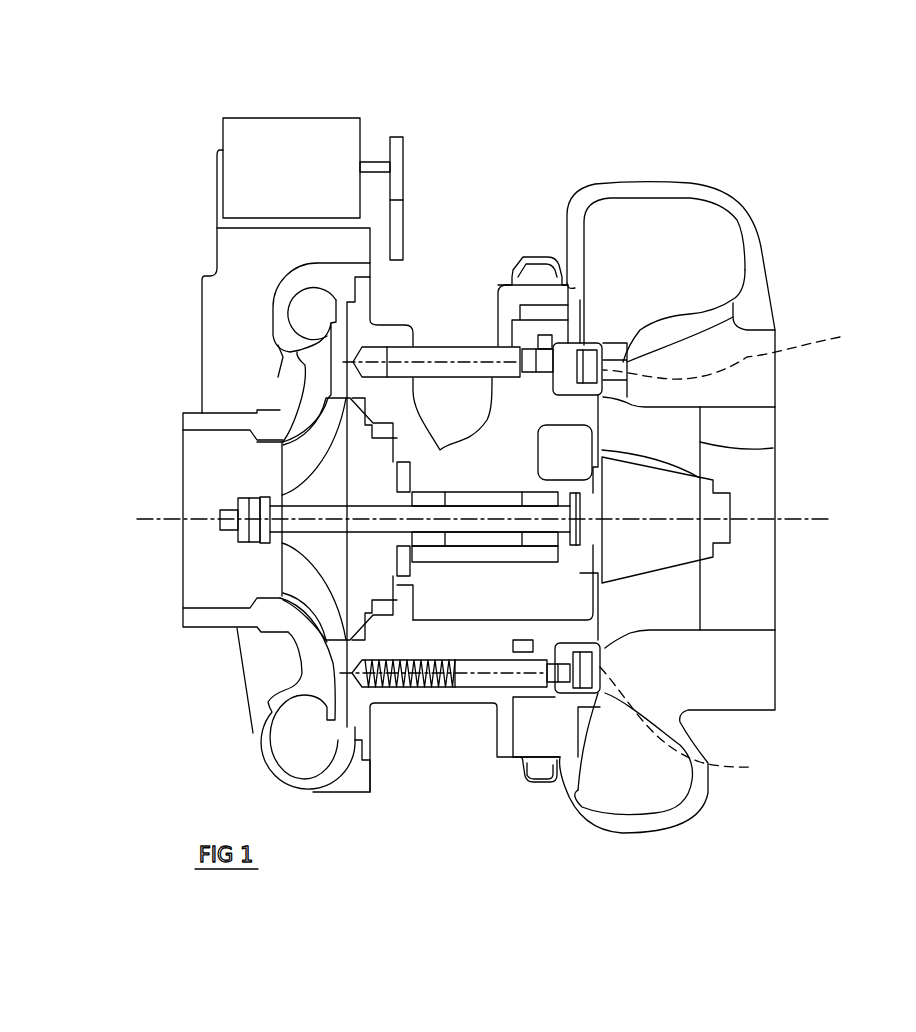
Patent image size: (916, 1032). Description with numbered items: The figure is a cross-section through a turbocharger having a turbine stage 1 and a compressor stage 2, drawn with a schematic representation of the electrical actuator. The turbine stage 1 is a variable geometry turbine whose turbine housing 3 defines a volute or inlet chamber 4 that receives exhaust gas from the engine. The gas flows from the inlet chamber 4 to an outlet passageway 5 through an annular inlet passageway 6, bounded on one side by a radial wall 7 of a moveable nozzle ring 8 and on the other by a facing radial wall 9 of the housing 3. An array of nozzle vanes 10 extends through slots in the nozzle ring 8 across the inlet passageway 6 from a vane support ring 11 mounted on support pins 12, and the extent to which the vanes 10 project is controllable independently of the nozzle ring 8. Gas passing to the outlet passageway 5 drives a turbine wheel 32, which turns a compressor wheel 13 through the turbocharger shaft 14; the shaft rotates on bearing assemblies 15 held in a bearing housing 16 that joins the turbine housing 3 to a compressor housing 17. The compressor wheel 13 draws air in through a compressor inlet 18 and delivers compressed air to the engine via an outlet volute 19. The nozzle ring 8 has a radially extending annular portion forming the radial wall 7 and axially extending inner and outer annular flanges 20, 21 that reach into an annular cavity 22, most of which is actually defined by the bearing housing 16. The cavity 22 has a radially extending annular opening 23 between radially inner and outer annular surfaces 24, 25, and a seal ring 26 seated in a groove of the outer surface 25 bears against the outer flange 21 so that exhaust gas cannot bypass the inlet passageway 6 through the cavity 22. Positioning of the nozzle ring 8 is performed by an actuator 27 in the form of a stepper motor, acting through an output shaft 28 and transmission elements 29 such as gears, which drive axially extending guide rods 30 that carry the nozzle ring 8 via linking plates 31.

The turbine stage 1 is at (678, 157).
The compressor stage 2 is at (126, 645).
The turbine housing 3 is at (723, 202).
The inlet chamber 4 is at (620, 217).
The outlet passageway 5 is at (760, 430).
The annular inlet passageway 6 is at (610, 337).
The radial wall 7 is at (729, 551).
The nozzle ring 8 is at (773, 448).
The facing radial wall 9 is at (743, 327).
The nozzle vanes 10 is at (605, 343).
The vane support ring 11 is at (603, 697).
The support pins 12 is at (475, 677).
The compressor wheel 13 is at (305, 575).
The turbocharger shaft 14 is at (480, 528).
The bearing assemblies 15 is at (433, 490).
The bearing housing 16 is at (405, 703).
The compressor housing 17 is at (283, 290).
The compressor inlet 18 is at (215, 458).
The outlet volute 19 is at (298, 742).
The inner annular flange 20 is at (558, 397).
The outer annular flange 21 is at (553, 340).
The annular cavity 22 is at (527, 697).
The annular opening 23 is at (617, 633).
The inner annular surface 24 is at (532, 648).
The outer annular surface 25 is at (560, 650).
The seal ring 26 is at (583, 330).
The actuator 27 is at (262, 128).
The output shaft 28 is at (375, 165).
The transmission elements 29 is at (447, 300).
The guide rods 30 is at (422, 378).
The linking plates 31 is at (522, 270).
The turbine wheel 32 is at (677, 453).